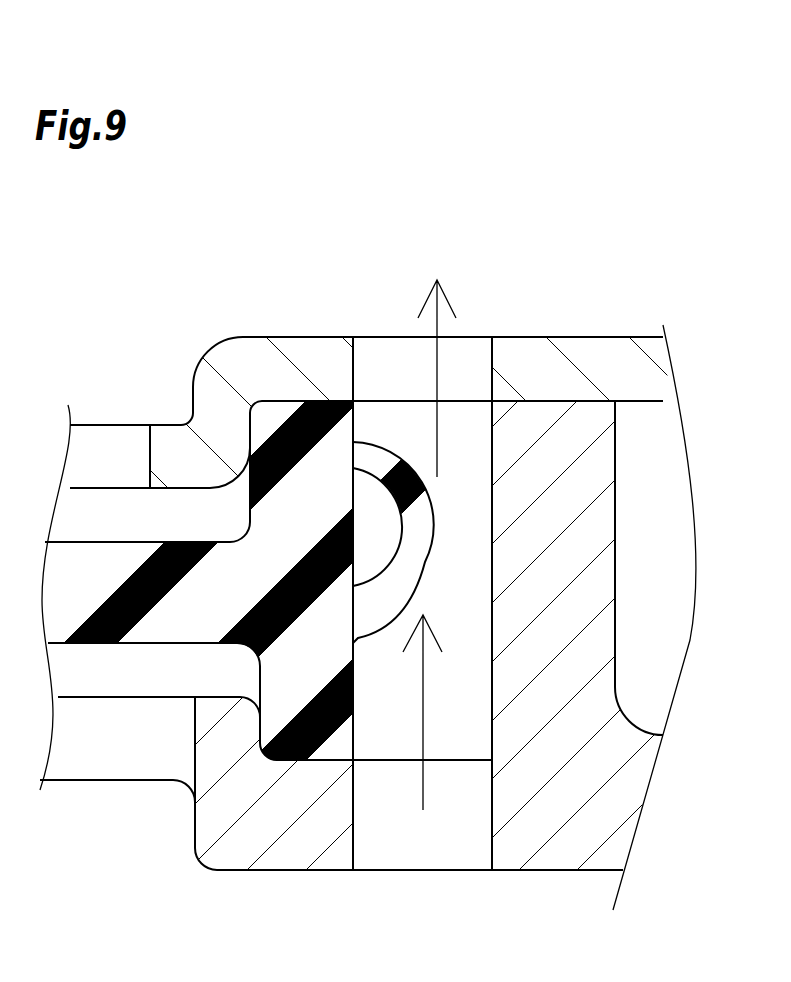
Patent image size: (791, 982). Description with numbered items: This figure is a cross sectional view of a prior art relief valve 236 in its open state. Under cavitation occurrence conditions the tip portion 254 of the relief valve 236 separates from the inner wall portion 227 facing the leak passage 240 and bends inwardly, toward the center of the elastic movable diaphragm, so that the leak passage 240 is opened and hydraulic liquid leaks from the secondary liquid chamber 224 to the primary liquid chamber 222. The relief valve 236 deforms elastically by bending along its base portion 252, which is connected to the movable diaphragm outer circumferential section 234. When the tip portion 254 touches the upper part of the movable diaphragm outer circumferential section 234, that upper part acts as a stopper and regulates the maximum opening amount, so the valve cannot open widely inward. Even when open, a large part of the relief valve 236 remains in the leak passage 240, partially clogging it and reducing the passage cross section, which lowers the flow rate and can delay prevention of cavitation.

The primary liquid chamber 222 is at (408, 258).
The secondary liquid chamber 224 is at (413, 969).
The inner wall portion 227 is at (490, 420).
The movable diaphragm outer circumferential section 234 is at (281, 420).
The relief valve 236 is at (435, 565).
The leak passage 240 is at (390, 730).
The base portion 252 is at (357, 592).
The tip portion 254 is at (356, 440).